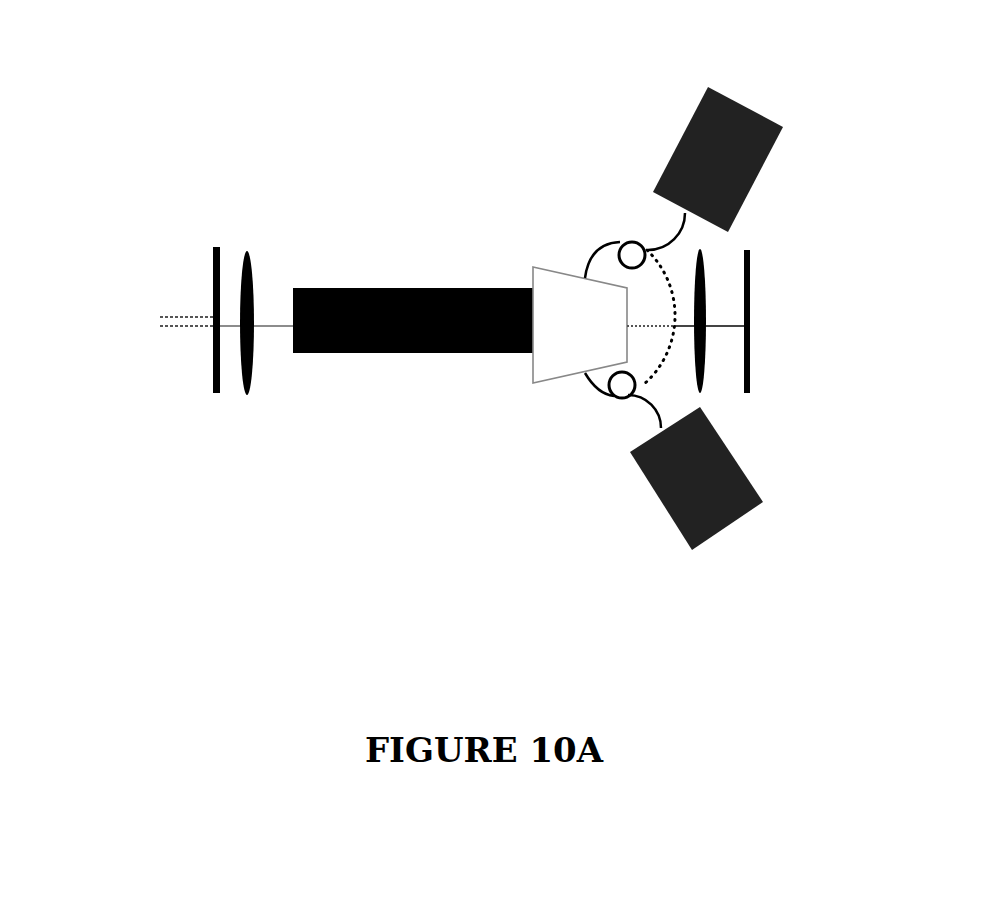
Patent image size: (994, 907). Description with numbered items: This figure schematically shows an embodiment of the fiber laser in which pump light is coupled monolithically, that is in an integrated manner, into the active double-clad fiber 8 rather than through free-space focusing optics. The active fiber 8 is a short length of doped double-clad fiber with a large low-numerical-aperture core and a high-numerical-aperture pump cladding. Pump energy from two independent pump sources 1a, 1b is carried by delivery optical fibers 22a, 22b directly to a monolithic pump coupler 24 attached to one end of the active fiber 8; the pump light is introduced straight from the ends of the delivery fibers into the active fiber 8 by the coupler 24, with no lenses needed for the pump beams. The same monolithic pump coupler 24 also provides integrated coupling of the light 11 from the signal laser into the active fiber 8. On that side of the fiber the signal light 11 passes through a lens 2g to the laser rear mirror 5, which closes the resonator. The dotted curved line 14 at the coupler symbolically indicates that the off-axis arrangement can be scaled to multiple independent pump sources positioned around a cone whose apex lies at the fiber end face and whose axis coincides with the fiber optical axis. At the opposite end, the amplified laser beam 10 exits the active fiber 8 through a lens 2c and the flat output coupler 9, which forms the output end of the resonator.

The amplified laser beam 10 is at (155, 330).
The flat output coupler 9 is at (212, 383).
The lens 2c is at (251, 305).
The active fiber 8 is at (390, 353).
The monolithic pump coupler 24 is at (547, 373).
The dotted curved line 14 is at (670, 295).
The delivery optical fiber 22a is at (623, 240).
The delivery optical fiber 22b is at (608, 393).
The pump source 1a is at (752, 112).
The pump source 1b is at (730, 520).
The light from the signal laser 11 is at (725, 312).
The lens 2g is at (707, 380).
The laser rear mirror 5 is at (748, 393).